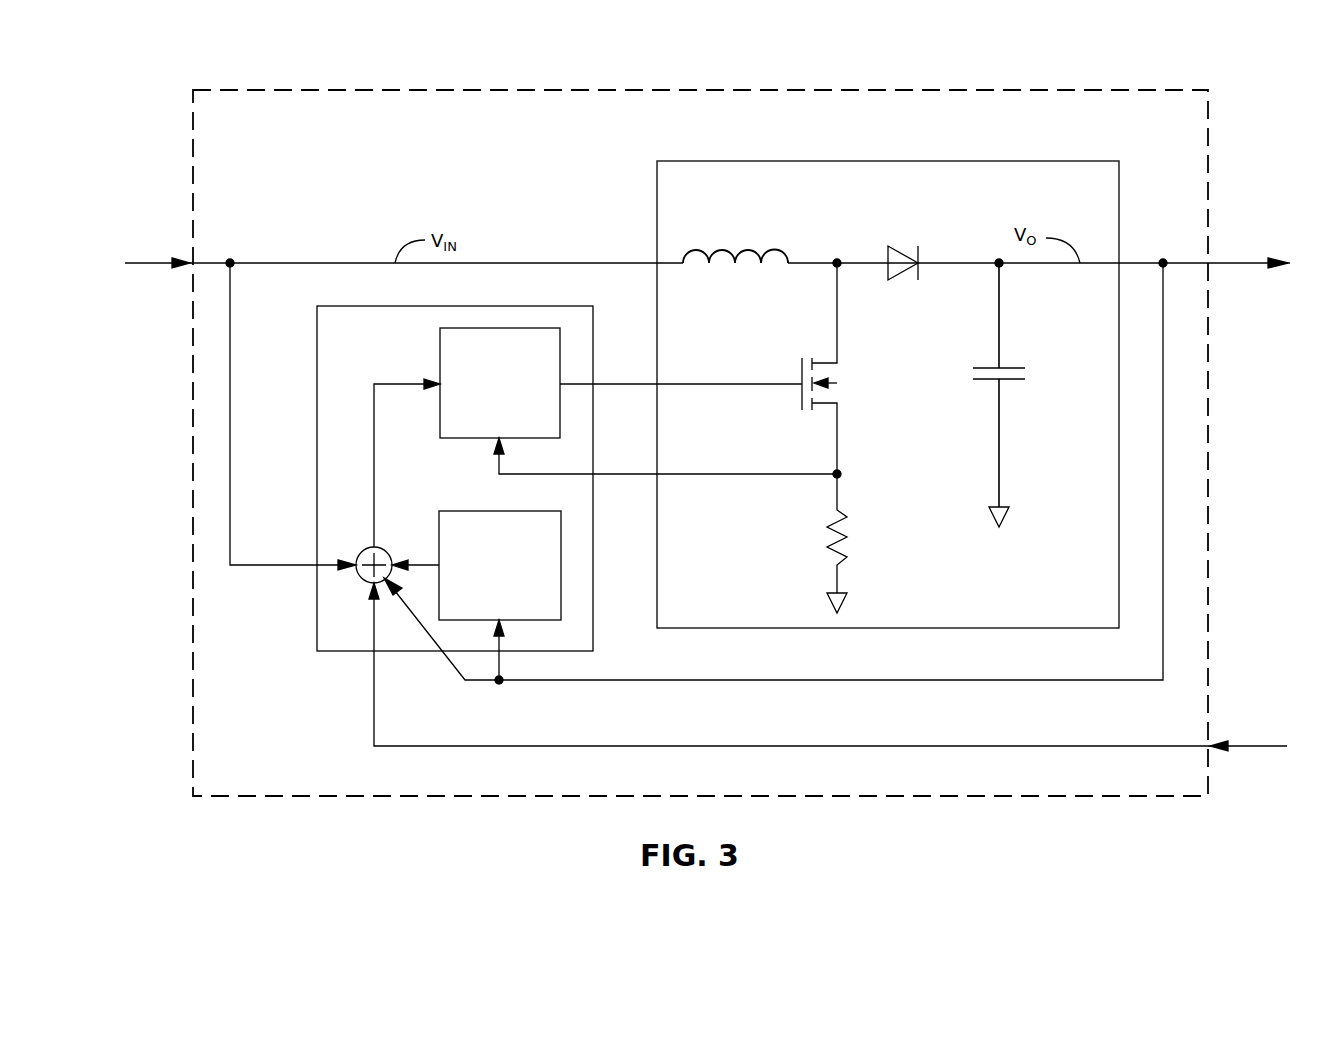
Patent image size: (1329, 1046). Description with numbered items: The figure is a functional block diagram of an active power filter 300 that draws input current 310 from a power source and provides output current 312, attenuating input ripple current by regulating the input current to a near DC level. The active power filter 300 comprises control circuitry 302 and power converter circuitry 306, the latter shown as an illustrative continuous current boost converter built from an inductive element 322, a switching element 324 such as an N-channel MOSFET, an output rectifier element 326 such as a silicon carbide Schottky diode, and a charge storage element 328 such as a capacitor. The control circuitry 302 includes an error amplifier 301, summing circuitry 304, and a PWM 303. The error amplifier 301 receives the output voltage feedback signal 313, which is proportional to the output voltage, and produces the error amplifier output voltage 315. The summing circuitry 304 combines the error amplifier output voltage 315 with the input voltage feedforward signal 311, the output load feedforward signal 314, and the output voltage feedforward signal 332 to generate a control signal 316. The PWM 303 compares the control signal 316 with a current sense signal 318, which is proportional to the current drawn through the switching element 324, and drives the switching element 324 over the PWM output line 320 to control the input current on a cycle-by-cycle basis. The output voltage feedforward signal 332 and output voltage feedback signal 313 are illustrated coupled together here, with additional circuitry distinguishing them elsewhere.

The active power filter 300 is at (744, 90).
The error amplifier 301 is at (479, 511).
The control circuitry 302 is at (456, 306).
The PWM 303 is at (438, 360).
The summing circuitry 304 is at (362, 552).
The power converter circuitry 306 is at (884, 161).
The input current 310 is at (148, 260).
The input voltage feedforward signal 311 is at (268, 570).
The output current 312 is at (1236, 260).
The output voltage feedback signal 313 is at (832, 681).
The output load feedforward signal 314 is at (812, 747).
The error amplifier output voltage 315 is at (414, 560).
The control signal 316 is at (372, 466).
The current sense signal 318 is at (623, 470).
The PWM output line 320 is at (623, 382).
The inductive element 322 is at (780, 245).
The switching element 324 is at (802, 368).
The output rectifier element 326 is at (903, 278).
The charge storage element 328 is at (1014, 382).
The output voltage feedforward signal 332 is at (430, 624).